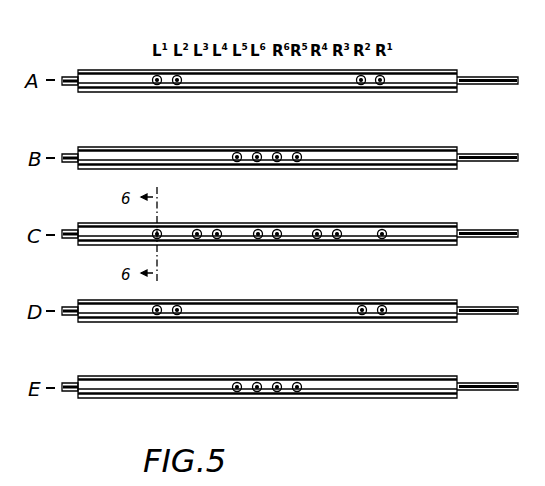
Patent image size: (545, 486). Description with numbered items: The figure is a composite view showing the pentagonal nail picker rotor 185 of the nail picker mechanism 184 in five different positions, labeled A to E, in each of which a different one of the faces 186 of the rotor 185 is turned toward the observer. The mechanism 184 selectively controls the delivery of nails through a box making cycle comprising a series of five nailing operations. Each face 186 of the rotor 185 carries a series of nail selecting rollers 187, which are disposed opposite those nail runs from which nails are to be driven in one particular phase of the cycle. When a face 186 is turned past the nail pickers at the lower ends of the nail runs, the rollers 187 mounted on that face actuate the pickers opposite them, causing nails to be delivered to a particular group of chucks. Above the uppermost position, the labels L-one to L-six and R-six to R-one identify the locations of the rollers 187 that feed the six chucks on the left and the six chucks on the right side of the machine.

The nail picker mechanism 184 is at (425, 58).
The pentagonal nail picker rotor 185 is at (400, 91).
The faces 186 is at (427, 157).
The nail selecting rollers 187 is at (379, 87).